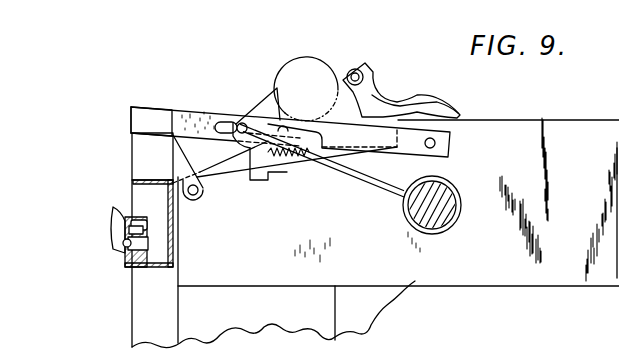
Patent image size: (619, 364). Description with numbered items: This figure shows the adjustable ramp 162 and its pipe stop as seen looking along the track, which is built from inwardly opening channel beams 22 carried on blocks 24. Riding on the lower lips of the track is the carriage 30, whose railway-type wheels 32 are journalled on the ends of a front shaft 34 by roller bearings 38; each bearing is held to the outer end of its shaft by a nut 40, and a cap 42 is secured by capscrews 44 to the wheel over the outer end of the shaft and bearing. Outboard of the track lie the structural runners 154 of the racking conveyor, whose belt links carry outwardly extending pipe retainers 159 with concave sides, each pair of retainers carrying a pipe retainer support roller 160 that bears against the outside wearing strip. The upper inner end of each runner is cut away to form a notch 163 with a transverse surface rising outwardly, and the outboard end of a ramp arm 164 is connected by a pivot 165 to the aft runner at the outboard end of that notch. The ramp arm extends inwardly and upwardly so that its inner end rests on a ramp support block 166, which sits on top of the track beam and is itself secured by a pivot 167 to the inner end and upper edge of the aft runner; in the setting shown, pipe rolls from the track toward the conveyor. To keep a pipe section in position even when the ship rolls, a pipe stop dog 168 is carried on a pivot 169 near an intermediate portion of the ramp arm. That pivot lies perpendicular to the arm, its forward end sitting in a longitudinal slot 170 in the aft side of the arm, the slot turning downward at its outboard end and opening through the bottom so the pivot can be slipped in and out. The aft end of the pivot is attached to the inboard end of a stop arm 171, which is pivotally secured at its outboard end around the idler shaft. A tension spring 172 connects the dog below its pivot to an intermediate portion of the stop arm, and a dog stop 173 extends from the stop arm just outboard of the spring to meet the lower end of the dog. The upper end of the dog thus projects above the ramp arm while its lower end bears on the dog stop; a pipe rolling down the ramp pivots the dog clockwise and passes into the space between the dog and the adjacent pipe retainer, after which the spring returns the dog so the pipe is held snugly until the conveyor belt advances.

The channel beams 22 is at (133, 183).
The blocks 24 is at (130, 320).
The carriage 30 is at (127, 243).
The wheels 32 is at (127, 260).
The front shaft 34 is at (123, 244).
The roller bearings 38 is at (118, 230).
The nut 40 is at (148, 243).
The cap 42 is at (143, 228).
The capscrews 44 is at (145, 217).
The structural runners 154 is at (536, 133).
The pipe retainer 159 is at (375, 94).
The pipe retainer support roller 160 is at (356, 66).
The adjustable ramp 162 is at (197, 107).
The notch 163 is at (240, 158).
The ramp arm 164 is at (147, 107).
The pivot 165 is at (434, 141).
The ramp support block 166 is at (142, 152).
The pivot 167 is at (203, 198).
The pipe stop dog 168 is at (267, 93).
The pivot 169 is at (241, 123).
The longitudinal slot 170 is at (287, 128).
The stop arm 171 is at (364, 178).
The tension spring 172 is at (251, 163).
The dog stop 173 is at (272, 176).